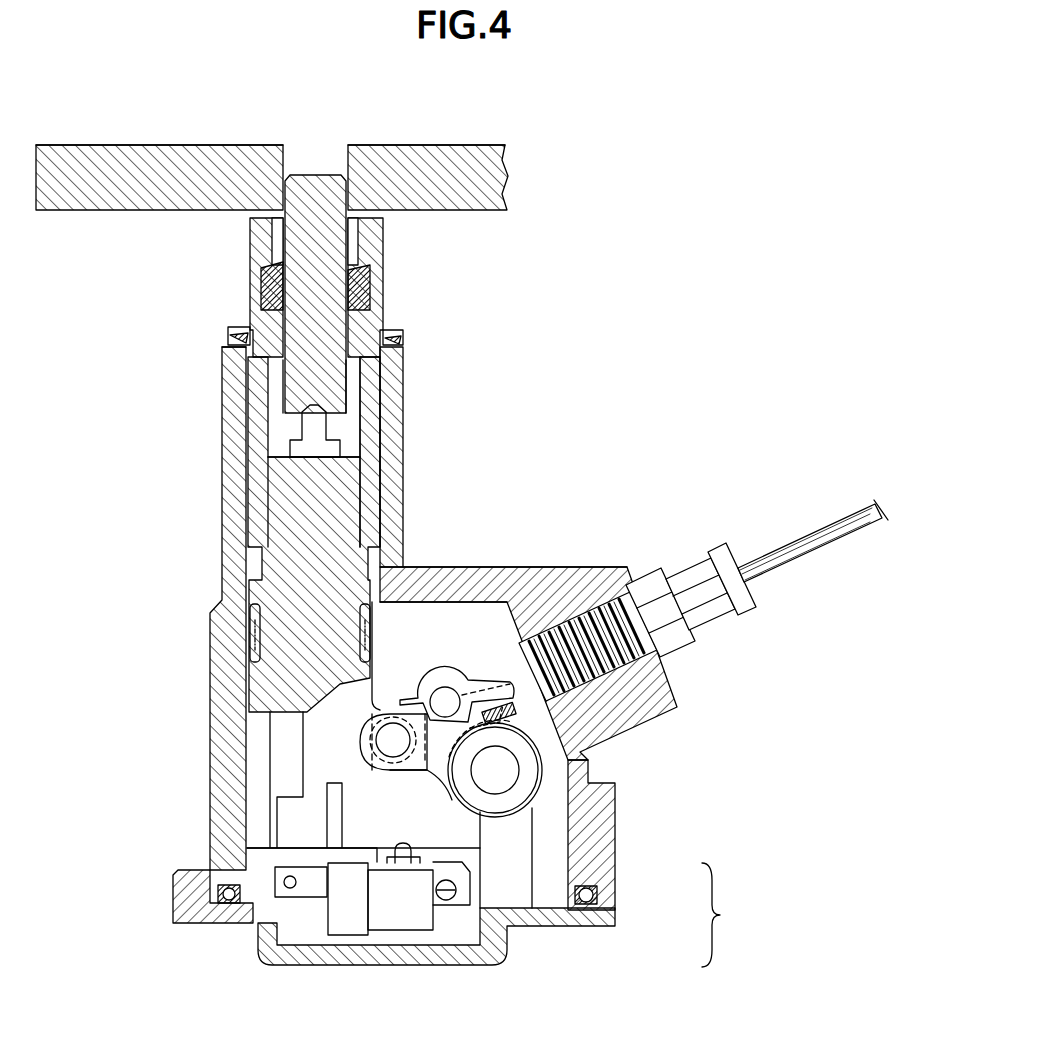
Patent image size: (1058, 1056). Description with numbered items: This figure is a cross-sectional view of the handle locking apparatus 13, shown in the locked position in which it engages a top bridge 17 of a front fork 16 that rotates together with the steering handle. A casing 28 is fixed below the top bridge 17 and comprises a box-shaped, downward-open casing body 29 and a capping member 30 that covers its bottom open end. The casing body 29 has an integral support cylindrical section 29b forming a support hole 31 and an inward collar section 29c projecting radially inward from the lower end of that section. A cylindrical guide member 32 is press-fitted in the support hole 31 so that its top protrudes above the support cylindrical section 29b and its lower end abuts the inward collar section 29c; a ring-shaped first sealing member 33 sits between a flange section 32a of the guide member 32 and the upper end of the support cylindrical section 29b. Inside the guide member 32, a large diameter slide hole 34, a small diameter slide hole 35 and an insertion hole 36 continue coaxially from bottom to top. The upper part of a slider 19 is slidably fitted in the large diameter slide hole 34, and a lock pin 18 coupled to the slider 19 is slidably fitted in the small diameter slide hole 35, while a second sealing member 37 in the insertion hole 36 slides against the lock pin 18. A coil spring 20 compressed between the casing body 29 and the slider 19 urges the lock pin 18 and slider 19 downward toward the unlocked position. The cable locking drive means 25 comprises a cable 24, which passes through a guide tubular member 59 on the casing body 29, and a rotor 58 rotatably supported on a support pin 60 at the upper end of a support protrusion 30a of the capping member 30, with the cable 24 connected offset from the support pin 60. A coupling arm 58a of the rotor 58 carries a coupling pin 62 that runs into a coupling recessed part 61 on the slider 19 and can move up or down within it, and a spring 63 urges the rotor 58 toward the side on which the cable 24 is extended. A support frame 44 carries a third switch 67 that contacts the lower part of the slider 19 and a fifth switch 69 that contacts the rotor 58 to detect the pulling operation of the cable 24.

The handle locking apparatus 13 is at (514, 556).
The front fork 16 is at (388, 142).
The top bridge 17 is at (430, 160).
The lock pin 18 is at (315, 195).
The slider 19 is at (300, 578).
The coil spring 20 is at (254, 620).
The cable 24 is at (785, 555).
The cable locking drive means 25 is at (518, 716).
The casing 28 is at (725, 915).
The casing body 29 is at (598, 860).
The support cylindrical section 29b is at (405, 412).
The inward collar section 29c is at (403, 567).
The capping member 30 is at (580, 925).
The support protrusion 30a is at (518, 862).
The support hole 31 is at (372, 383).
The guide member 32 is at (262, 268).
The flange section 32a is at (238, 333).
The first sealing member 33 is at (235, 345).
The large diameter slide hole 34 is at (347, 490).
The small diameter slide hole 35 is at (370, 353).
The insertion hole 36 is at (372, 267).
The second sealing member 37 is at (372, 292).
The support frame 44 is at (343, 925).
The rotor 58 is at (468, 692).
The coupling arm 58a is at (380, 714).
The guide tubular member 59 is at (705, 595).
The support pin 60 is at (512, 772).
The coupling recessed part 61 is at (393, 757).
The coupling pin 62 is at (372, 752).
The spring 63 is at (543, 778).
The third switch 67 is at (303, 890).
The fifth switch 69 is at (392, 915).